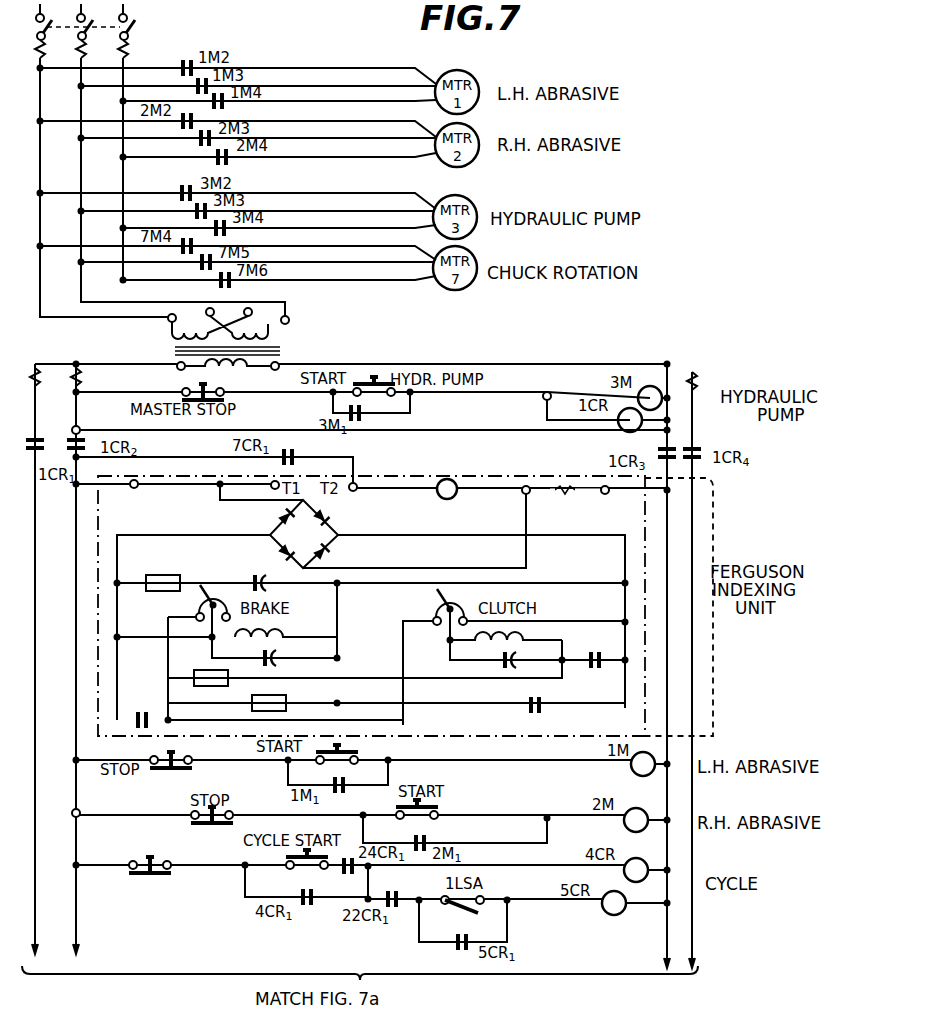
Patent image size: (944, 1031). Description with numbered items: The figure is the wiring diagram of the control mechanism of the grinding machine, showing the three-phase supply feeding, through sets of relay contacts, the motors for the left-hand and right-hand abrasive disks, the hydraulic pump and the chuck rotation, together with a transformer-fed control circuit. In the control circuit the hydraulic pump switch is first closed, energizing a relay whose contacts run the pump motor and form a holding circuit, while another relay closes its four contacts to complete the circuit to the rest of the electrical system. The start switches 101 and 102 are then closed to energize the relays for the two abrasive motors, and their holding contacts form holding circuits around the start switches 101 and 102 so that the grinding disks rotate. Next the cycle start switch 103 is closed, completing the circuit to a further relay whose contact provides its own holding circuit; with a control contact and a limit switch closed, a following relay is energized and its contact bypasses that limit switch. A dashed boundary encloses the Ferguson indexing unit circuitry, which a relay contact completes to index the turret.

The start switch 101 is at (360, 750).
The start switch 102 is at (440, 806).
The cycle start switch 103 is at (286, 858).